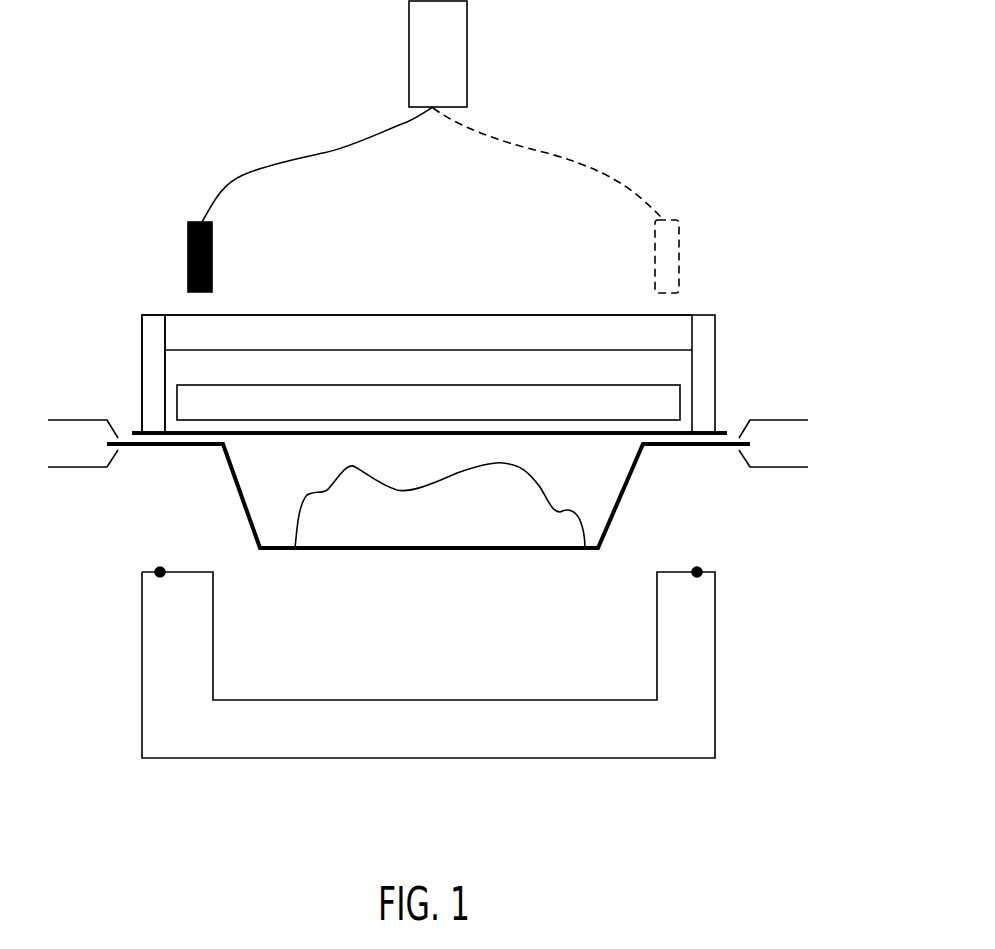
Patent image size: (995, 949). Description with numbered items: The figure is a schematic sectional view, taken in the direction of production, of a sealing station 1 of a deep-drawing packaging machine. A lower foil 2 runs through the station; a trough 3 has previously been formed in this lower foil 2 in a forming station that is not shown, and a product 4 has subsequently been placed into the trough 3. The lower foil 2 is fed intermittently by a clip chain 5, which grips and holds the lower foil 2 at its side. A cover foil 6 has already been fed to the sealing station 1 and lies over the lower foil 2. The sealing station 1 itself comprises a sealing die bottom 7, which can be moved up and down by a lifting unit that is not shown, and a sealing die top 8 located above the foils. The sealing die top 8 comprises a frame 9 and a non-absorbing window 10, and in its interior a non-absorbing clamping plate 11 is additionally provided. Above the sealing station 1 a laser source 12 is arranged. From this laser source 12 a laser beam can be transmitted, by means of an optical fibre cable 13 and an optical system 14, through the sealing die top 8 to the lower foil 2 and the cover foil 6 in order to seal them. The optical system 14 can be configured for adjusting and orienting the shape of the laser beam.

The sealing station 1 is at (652, 64).
The lower foil 2 is at (720, 443).
The trough 3 is at (548, 548).
The product 4 is at (488, 527).
The clip chain 5 is at (808, 420).
The cover foil 6 is at (720, 430).
The sealing die bottom 7 is at (367, 742).
The sealing die top 8 is at (296, 294).
The frame 9 is at (150, 378).
The non-absorbing window 10 is at (185, 328).
The non-absorbing clamping plate 11 is at (340, 400).
The laser source 12 is at (453, 28).
The optical fibre cable 13 is at (333, 148).
The optical system 14 is at (188, 233).